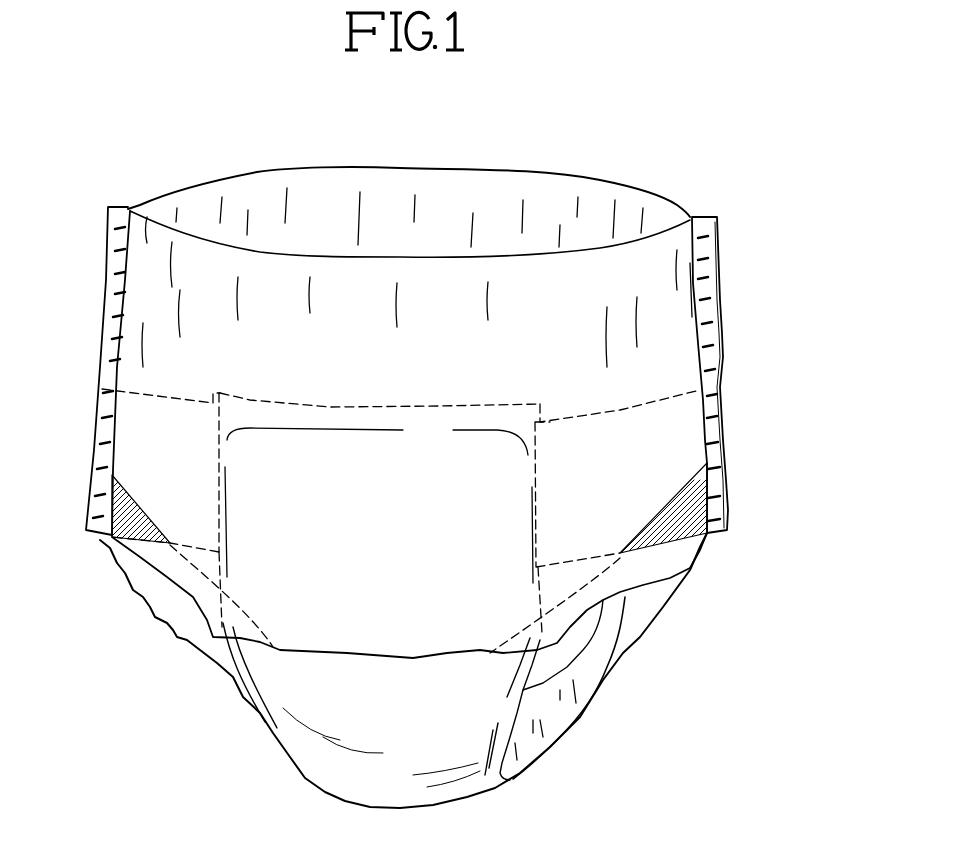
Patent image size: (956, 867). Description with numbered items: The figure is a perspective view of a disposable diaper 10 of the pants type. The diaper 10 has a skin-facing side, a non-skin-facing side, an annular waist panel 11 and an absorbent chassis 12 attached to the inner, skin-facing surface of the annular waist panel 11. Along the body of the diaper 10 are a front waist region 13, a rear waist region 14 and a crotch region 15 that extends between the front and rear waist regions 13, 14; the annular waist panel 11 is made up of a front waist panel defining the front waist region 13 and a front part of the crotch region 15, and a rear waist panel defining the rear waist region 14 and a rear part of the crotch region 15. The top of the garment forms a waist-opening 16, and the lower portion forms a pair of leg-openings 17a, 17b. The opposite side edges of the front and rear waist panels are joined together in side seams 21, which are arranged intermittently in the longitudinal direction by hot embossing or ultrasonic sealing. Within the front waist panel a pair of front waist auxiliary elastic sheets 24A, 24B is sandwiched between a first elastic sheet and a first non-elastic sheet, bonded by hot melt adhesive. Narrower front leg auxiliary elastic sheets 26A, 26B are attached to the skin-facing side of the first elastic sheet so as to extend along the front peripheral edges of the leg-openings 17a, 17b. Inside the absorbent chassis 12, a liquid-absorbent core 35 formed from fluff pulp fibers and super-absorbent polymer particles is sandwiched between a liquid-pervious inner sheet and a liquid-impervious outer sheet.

The diaper 10 is at (648, 124).
The annular waist panel 11 is at (155, 212).
The absorbent chassis 12 is at (280, 723).
The front waist region 13 is at (627, 317).
The rear waist region 14 is at (320, 190).
The crotch region 15 is at (567, 723).
The waist-opening 16 is at (505, 187).
The leg-opening 17a is at (580, 637).
The leg-opening 17b is at (163, 598).
The side seams 21 is at (118, 251).
The front waist auxiliary elastic sheet 24A is at (166, 398).
The front waist auxiliary elastic sheet 24B is at (688, 432).
The front leg auxiliary elastic sheet 26A is at (157, 553).
The front leg auxiliary elastic sheet 26B is at (658, 568).
The liquid-absorbent core 35 is at (327, 453).